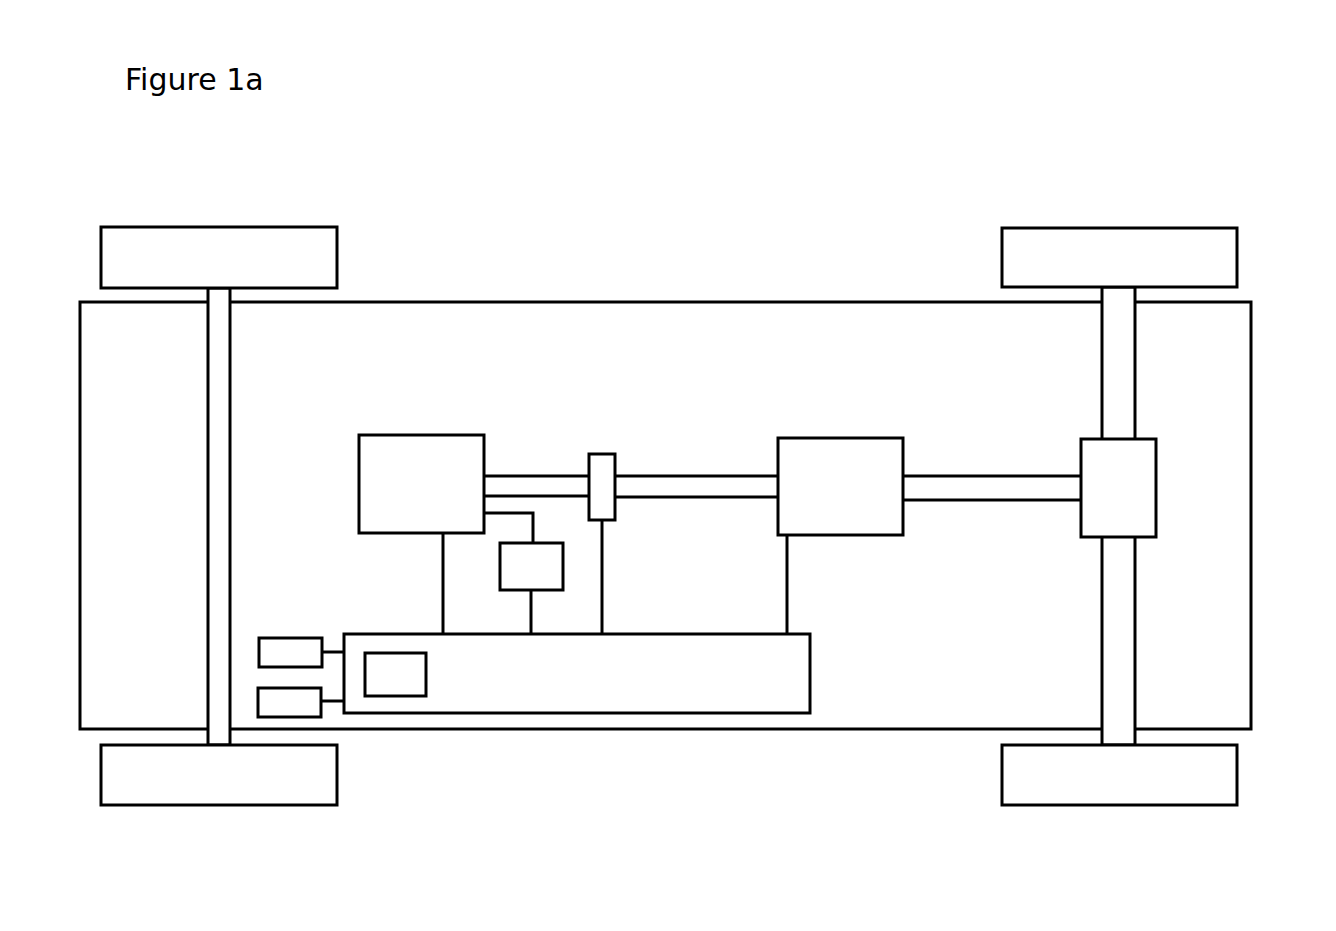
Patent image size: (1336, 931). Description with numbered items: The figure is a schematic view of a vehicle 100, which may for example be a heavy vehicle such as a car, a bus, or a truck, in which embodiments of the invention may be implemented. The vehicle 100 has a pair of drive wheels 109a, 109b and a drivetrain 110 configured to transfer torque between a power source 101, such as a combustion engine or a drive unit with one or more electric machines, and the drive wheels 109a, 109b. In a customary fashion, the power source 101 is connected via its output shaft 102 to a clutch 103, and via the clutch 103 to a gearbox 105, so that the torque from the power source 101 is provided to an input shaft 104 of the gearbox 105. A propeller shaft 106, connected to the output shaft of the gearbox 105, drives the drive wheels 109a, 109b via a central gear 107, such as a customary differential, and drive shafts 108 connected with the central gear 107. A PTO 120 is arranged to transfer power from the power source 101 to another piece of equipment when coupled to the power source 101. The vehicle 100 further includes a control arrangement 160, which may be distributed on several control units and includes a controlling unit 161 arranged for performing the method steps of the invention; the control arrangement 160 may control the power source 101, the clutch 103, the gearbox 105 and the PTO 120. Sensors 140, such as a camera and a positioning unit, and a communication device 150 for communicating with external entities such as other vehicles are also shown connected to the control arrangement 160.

The vehicle 100 is at (563, 133).
The power source 101 is at (430, 450).
The output shaft 102 is at (555, 484).
The clutch 103 is at (597, 465).
The input shaft 104 is at (685, 485).
The gearbox 105 is at (842, 450).
The propeller shaft 106 is at (984, 490).
The central gear 107 is at (1148, 483).
The drive shafts 108 is at (1122, 405).
The drive wheel 109a is at (1232, 243).
The drive wheel 109b is at (1232, 775).
The drivetrain 110 is at (756, 407).
The PTO 120 is at (531, 588).
The sensors 140 is at (301, 652).
The communication device 150 is at (301, 702).
The control arrangement 160 is at (577, 673).
The controlling unit 161 is at (395, 674).